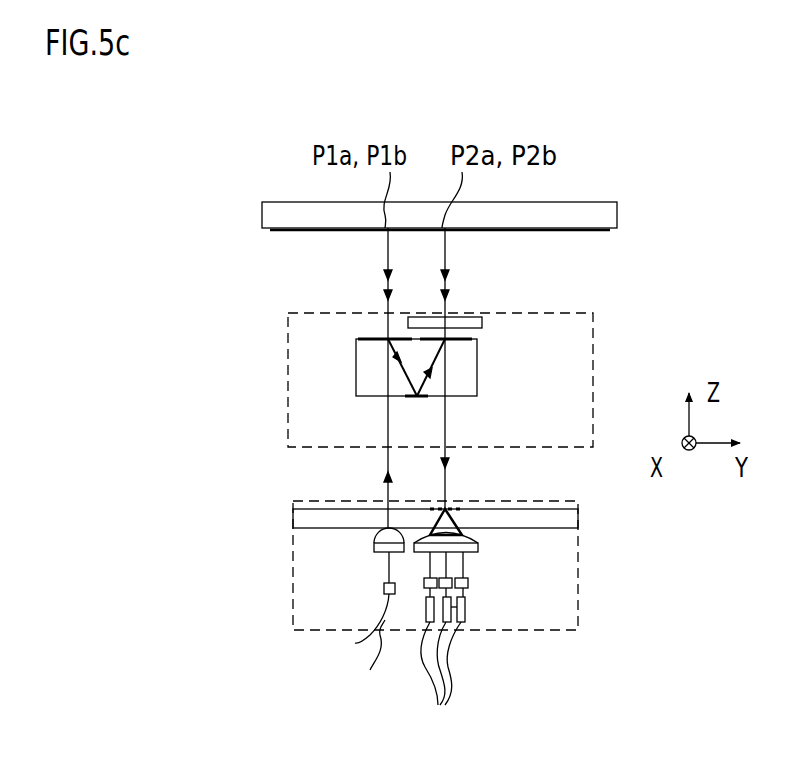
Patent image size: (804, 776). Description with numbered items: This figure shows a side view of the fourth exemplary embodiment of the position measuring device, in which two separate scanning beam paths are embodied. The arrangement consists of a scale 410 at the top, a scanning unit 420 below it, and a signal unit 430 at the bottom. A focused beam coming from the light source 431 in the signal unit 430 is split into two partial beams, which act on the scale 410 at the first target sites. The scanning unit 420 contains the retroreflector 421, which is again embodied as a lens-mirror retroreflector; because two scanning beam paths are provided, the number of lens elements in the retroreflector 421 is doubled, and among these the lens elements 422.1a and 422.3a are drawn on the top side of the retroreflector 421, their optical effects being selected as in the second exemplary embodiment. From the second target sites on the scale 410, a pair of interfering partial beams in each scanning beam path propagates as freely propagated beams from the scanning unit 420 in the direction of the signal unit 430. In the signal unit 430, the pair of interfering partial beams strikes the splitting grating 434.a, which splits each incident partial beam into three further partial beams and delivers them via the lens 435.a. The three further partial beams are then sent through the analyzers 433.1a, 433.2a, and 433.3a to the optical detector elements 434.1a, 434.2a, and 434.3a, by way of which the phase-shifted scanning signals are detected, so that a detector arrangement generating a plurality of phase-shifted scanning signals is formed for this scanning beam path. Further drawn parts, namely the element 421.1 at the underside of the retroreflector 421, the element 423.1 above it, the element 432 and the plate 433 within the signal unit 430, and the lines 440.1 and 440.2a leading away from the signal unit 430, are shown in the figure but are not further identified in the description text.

The scale 410 is at (230, 220).
The scanning unit 420 is at (256, 345).
The retroreflector 421 is at (470, 378).
The reflective coating 421.1 is at (417, 397).
The lens element 422.1a is at (371, 339).
The lens element 422.3a is at (473, 338).
The light source / aperture plate 423.1 is at (472, 317).
The signal unit 430 is at (270, 572).
The light source 431 is at (384, 588).
The lens of reference channel 432 is at (374, 545).
The detector plate 433 is at (293, 516).
The analyzer 433.1a is at (466, 597).
The analyzer 433.2a is at (465, 578).
The analyzer 433.3a is at (427, 585).
The splitting grating 434.a is at (447, 506).
The optical detector element 434.1a is at (465, 619).
The optical detector element 434.2a is at (467, 612).
The optical detector element 434.3a is at (466, 605).
The lens 435.a is at (463, 540).
The reference signal line 440.1 is at (365, 661).
The measurement signal lines 440.2a is at (449, 684).